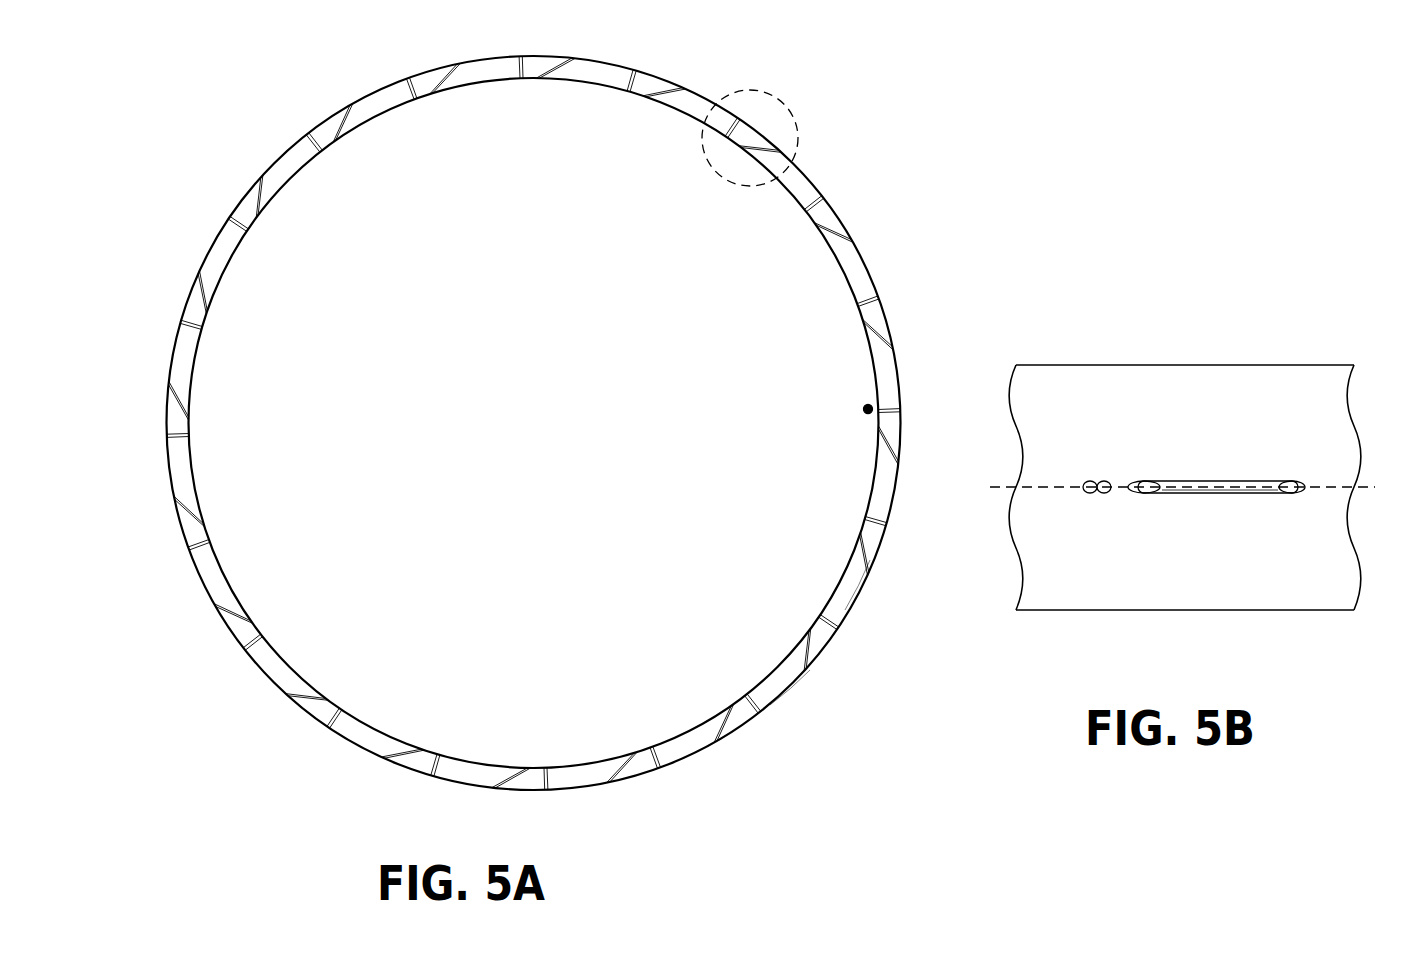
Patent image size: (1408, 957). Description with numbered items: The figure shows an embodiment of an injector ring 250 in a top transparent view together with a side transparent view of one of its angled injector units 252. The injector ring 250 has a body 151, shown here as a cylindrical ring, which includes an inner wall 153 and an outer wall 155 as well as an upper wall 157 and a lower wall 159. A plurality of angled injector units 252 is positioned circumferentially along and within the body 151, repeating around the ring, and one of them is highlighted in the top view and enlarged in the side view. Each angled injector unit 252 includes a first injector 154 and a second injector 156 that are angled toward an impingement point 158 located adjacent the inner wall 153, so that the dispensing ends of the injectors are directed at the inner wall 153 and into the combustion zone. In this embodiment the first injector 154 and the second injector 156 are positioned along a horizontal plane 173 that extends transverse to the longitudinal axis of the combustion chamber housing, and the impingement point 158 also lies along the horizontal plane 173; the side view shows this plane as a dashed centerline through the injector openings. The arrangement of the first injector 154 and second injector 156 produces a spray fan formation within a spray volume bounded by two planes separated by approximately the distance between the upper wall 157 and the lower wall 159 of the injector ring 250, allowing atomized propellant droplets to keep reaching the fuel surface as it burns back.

In FIG. 5A, the injector ring 250 is at (302, 80).
In FIG. 5A, the body 151 is at (655, 73).
In FIG. 5B, the body 151 is at (1029, 365).
In FIG. 5A, the angled injector unit 252 is at (781, 109).
In FIG. 5B, the angled injector unit 252 is at (1312, 349).
In FIG. 5A, the first injector 154 is at (888, 407).
In FIG. 5B, the first injector 154 is at (1083, 484).
In FIG. 5A, the second injector 156 is at (888, 433).
In FIG. 5B, the second injector 156 is at (1233, 482).
In FIG. 5A, the impingement point 158 is at (866, 409).
In FIG. 5A, the inner wall 153 is at (845, 574).
In FIG. 5A, the outer wall 155 is at (788, 692).
In FIG. 5B, the upper wall 157 is at (1147, 364).
In FIG. 5B, the lower wall 159 is at (1058, 612).
In FIG. 5B, the horizontal plane 173 is at (1005, 490).